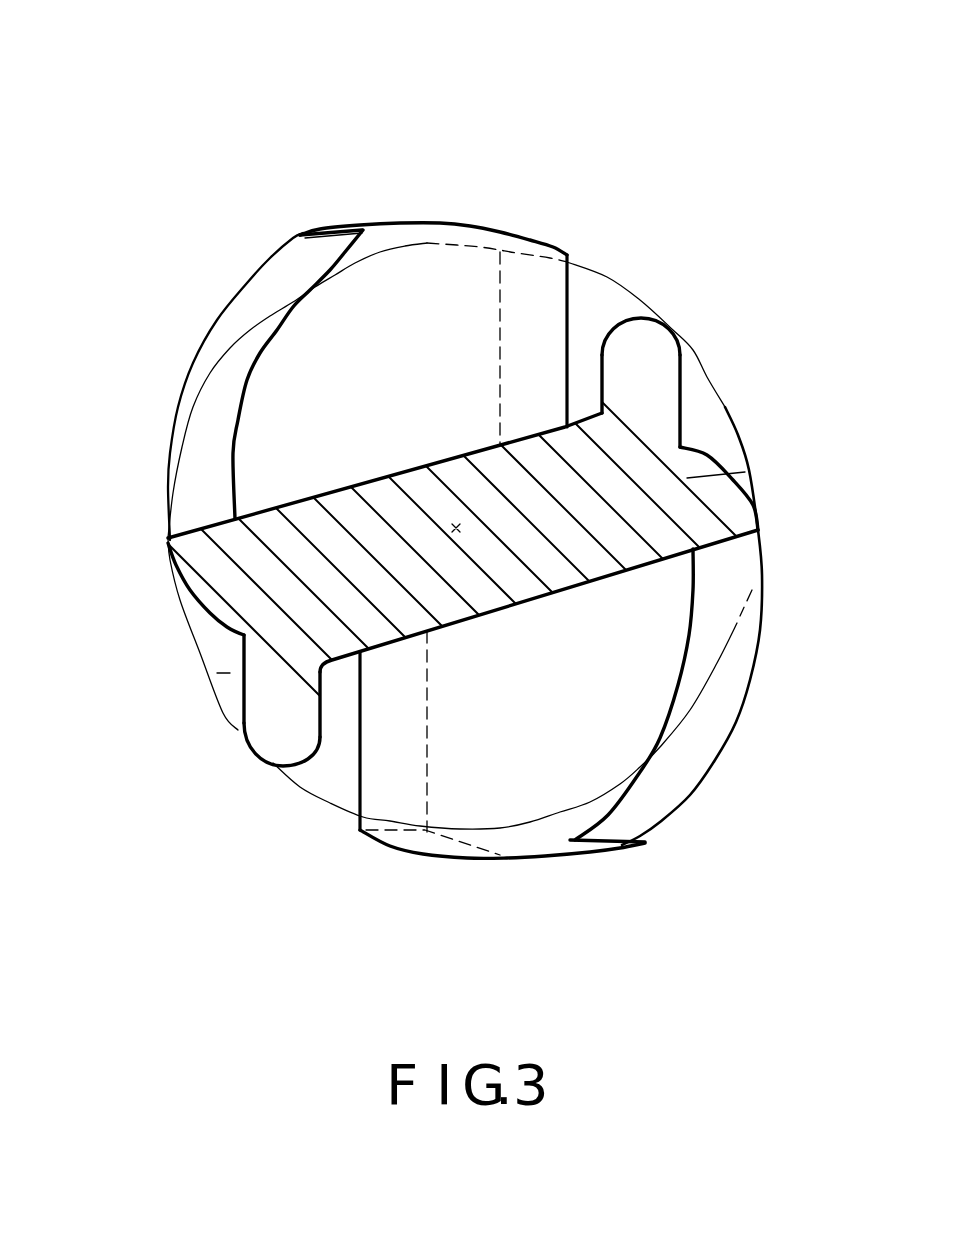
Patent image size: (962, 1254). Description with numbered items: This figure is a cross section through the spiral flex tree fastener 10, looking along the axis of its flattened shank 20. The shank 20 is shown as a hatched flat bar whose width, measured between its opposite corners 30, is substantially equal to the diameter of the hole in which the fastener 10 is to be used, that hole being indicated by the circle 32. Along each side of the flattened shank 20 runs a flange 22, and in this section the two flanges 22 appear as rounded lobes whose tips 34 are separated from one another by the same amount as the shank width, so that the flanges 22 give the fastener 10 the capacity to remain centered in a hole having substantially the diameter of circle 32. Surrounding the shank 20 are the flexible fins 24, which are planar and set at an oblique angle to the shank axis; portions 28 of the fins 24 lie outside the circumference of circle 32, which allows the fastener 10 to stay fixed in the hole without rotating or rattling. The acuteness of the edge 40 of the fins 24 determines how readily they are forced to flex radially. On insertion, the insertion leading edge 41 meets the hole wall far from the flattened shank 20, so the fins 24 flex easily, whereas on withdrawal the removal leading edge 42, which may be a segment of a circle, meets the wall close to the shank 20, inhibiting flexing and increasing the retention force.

The spiral flex tree fastener 10 is at (715, 101).
The flattened shank 20 is at (257, 563).
The flange 22 is at (645, 380).
The flexible fin 24 is at (283, 393).
The portion of fin lying outside circle 28 is at (360, 227).
The corner of flattened shank 30 is at (167, 545).
The circle indicating hole 32 is at (693, 350).
The flange tip 34 is at (647, 340).
The fin edge 40 is at (570, 297).
The insertion leading edge 41 is at (493, 227).
The removal leading edge 42 is at (185, 385).